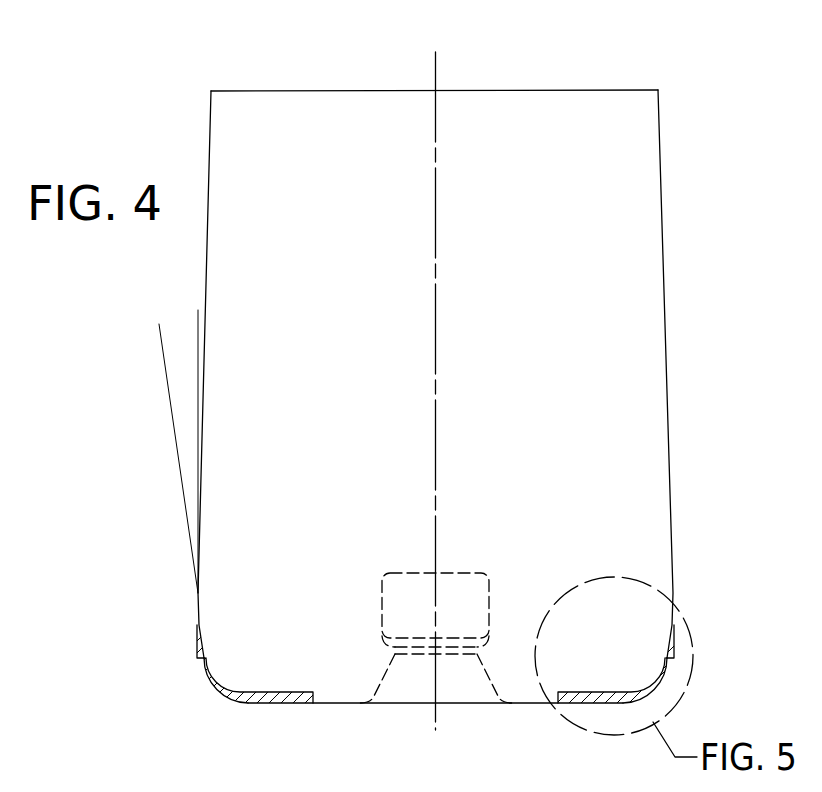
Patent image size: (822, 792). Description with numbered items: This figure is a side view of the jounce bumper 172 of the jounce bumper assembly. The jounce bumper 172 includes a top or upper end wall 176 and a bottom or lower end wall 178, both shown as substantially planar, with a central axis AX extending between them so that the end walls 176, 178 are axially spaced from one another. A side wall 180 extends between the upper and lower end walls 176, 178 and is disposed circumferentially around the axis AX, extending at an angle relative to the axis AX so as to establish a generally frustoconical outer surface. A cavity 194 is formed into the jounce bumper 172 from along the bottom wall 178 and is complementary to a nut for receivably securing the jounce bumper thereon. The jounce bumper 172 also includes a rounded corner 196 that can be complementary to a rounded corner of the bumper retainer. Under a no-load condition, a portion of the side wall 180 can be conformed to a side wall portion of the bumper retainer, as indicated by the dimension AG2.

The jounce bumper 172 is at (698, 111).
The upper end wall 176 is at (537, 90).
The lower end wall 178 is at (347, 703).
The side wall 180 is at (664, 327).
The cavity 194 is at (461, 672).
The rounded corner 196 is at (222, 690).
The central axis AX is at (435, 252).
The angle dimension AG2 is at (278, 370).